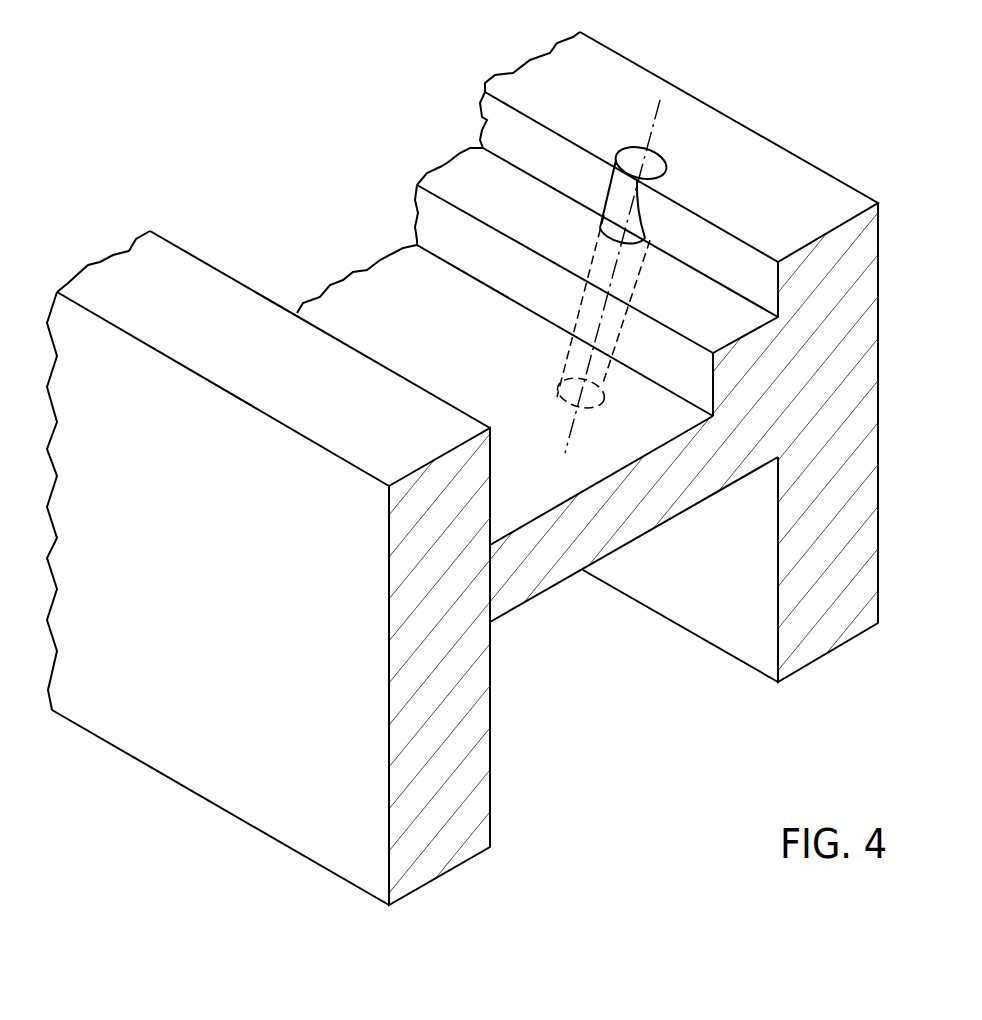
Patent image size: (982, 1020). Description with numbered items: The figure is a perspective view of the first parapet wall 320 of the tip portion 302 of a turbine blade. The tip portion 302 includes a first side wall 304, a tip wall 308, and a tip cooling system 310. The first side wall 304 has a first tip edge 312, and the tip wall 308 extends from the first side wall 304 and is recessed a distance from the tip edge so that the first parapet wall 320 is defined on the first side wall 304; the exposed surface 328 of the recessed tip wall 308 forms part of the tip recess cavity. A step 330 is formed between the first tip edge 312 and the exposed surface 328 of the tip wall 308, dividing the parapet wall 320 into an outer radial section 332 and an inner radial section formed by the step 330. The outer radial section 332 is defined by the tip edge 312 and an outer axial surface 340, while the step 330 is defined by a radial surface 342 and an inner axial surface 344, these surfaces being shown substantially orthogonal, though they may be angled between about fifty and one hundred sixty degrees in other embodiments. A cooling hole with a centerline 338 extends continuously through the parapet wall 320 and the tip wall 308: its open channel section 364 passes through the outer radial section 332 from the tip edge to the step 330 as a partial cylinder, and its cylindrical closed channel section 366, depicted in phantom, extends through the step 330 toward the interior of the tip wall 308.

The tip portion 302 is at (824, 110).
The first side wall 304 is at (835, 515).
The tip wall 308 is at (662, 493).
The tip cooling system 310 is at (611, 140).
The first tip edge 312 is at (835, 190).
The first parapet wall 320 is at (523, 82).
The exposed surface 328 is at (352, 300).
The step 330 is at (745, 378).
The outer radial section 332 is at (835, 262).
The centerline 338 is at (660, 115).
The outer axial surface 340 is at (487, 119).
The radial surface 342 is at (452, 172).
The inner axial surface 344 is at (428, 221).
The open channel section 364 is at (625, 188).
The closed channel section 366 is at (625, 273).